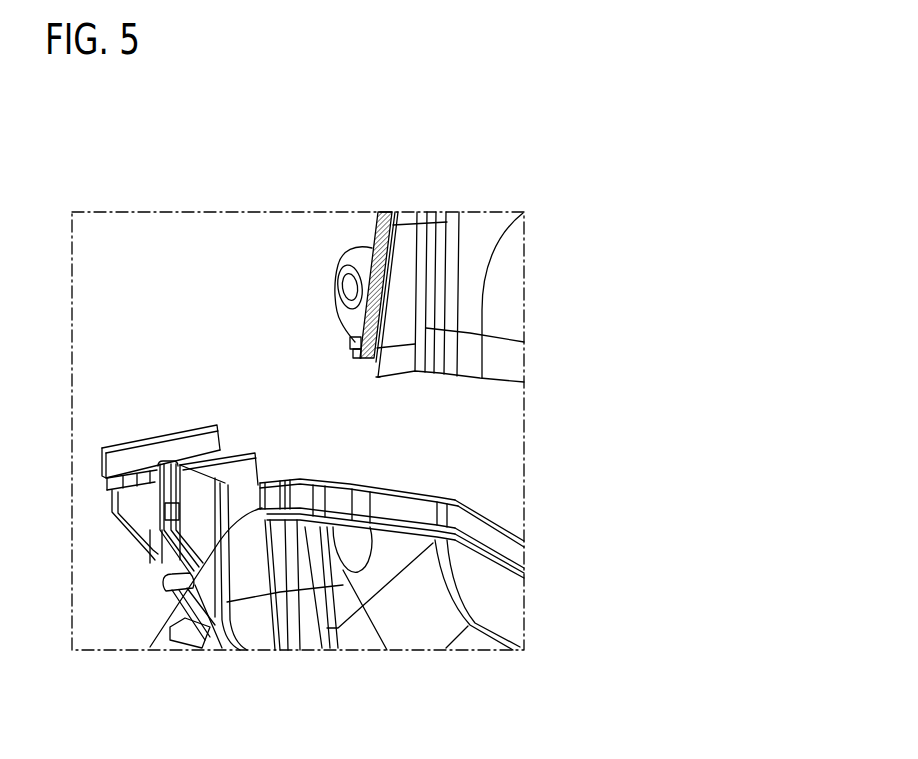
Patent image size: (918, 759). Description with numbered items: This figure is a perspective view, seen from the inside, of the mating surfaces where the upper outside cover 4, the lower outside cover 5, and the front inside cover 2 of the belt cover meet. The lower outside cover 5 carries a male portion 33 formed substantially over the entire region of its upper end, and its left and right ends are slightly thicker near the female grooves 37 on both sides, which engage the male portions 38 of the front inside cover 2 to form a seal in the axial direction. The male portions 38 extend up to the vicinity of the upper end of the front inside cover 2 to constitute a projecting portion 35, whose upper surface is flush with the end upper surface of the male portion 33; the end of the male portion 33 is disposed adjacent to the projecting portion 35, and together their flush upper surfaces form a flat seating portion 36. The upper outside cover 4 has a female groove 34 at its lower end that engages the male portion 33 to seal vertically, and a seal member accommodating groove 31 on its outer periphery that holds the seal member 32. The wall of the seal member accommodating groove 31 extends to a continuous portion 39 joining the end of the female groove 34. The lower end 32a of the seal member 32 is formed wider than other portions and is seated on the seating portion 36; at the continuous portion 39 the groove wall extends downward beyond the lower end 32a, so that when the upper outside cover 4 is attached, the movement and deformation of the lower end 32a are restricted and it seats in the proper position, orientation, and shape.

The front inside cover 2 is at (157, 502).
The upper outside cover 4 is at (510, 290).
The lower outside cover 5 is at (505, 602).
The seal member accommodating groove 31 is at (392, 250).
The seal member 32 is at (378, 228).
The lower end of seal member 32a is at (352, 340).
The male portion 33 is at (479, 535).
The female groove 34 is at (505, 364).
The projecting portion 35 is at (176, 608).
The seating portion 36 is at (283, 478).
The female grooves 37 is at (290, 632).
The male portions 38 is at (263, 560).
The continuous portion 39 is at (395, 365).